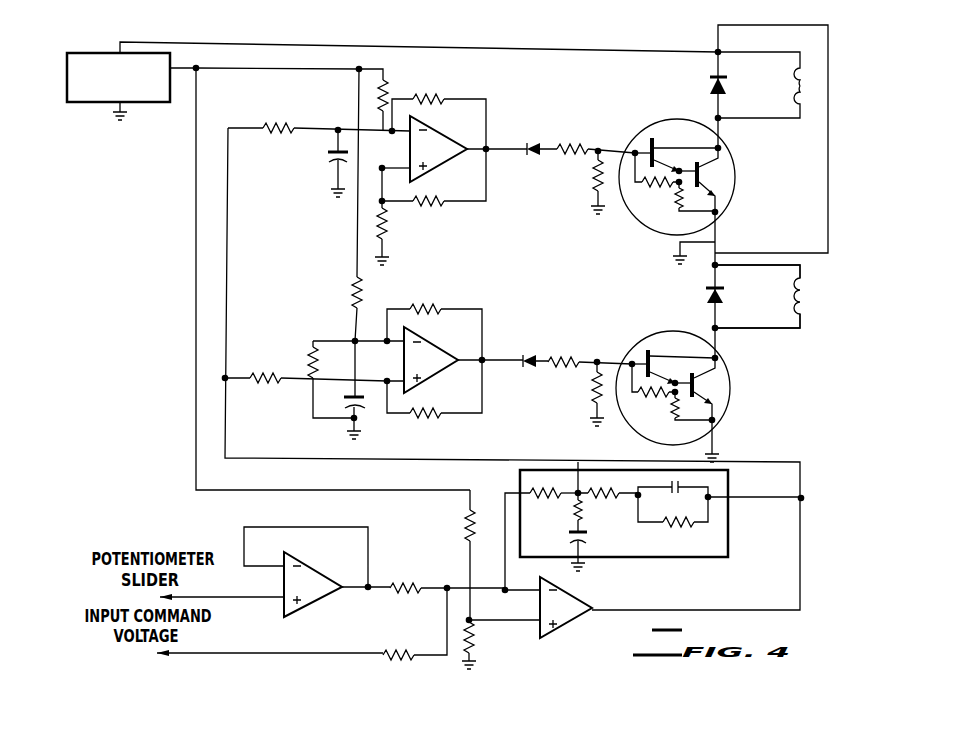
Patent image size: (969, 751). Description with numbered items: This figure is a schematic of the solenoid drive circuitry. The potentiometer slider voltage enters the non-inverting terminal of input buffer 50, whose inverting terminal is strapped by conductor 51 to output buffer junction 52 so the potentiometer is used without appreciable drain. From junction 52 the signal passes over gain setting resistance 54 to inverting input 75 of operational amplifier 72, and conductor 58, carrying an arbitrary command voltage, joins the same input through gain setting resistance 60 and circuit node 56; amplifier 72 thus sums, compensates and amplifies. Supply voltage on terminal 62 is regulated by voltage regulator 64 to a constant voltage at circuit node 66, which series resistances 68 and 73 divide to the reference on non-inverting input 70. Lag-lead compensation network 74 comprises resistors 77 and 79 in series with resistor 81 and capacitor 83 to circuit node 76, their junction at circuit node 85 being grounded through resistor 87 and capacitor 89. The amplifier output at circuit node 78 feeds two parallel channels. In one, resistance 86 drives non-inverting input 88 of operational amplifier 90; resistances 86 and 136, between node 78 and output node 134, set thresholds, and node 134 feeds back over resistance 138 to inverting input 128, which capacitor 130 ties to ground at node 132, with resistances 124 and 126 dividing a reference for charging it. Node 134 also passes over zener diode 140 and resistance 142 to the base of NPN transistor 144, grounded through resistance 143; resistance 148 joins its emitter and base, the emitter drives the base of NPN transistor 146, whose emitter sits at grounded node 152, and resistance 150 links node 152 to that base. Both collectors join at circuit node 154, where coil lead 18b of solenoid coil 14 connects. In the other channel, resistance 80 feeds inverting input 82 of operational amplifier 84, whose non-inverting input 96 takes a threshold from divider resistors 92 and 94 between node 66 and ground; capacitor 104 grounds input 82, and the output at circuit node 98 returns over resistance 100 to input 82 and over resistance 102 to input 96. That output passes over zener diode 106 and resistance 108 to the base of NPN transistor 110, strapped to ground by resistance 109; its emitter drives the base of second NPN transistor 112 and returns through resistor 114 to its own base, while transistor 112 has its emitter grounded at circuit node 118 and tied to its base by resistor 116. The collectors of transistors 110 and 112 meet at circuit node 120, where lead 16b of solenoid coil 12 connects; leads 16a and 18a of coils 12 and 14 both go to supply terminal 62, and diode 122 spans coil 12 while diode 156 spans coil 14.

The solenoid coil 12 is at (814, 105).
The solenoid coil 14 is at (804, 308).
The lead 16a is at (774, 55).
The lead 16b is at (771, 119).
The lead 18a is at (738, 267).
The coil lead 18b is at (744, 327).
The input buffer 50 is at (318, 570).
The conductor 51 is at (244, 531).
The buffer junction 52 is at (366, 590).
The gain setting resistance 54 is at (399, 585).
The circuit node 56 is at (448, 585).
The conductor 58 is at (239, 652).
The gain setting resistance 60 is at (385, 658).
The terminal 62 is at (716, 52).
The voltage regulator 64 is at (80, 52).
The circuit node 66 is at (198, 67).
The series resistance 68 is at (468, 530).
The non-inverting input 70 is at (473, 627).
The operational amplifier 72 is at (566, 626).
The series resistance 73 is at (475, 653).
The compensation network 74 is at (520, 480).
The inverting input 75 is at (507, 588).
The circuit node 76 is at (803, 498).
The resistor 77 is at (546, 498).
The circuit node 78 is at (224, 376).
The resistor 79 is at (612, 498).
The resistance 80 is at (268, 127).
The resistor 81 is at (673, 524).
The inverting input 82 is at (385, 134).
The capacitor 83 is at (669, 492).
The operational amplifier 84 is at (439, 170).
The circuit node 85 is at (577, 463).
The resistance 86 is at (256, 376).
The resistor 87 is at (572, 515).
The non-inverting input 88 is at (387, 380).
The capacitor 89 is at (593, 535).
The operational amplifier 90 is at (438, 348).
The resistor 92 is at (389, 86).
The resistor 94 is at (390, 234).
The non-inverting input 96 is at (380, 169).
The circuit node 98 is at (488, 152).
The resistance 100 is at (443, 94).
The resistance 102 is at (442, 203).
The capacitor 104 is at (330, 153).
The zener diode 106 is at (530, 144).
The resistance 108 is at (553, 145).
The resistance 109 is at (591, 189).
The NPN transistor 110 is at (656, 138).
The second NPN transistor 112 is at (707, 170).
The resistor 114 is at (656, 190).
The resistor 116 is at (676, 206).
The circuit node 118 is at (723, 208).
The circuit node 120 is at (721, 148).
The diode 122 is at (708, 86).
The resistance 124 is at (352, 293).
The resistance 126 is at (310, 348).
The inverting input 128 is at (387, 340).
The capacitor 130 is at (363, 408).
The node 132 is at (349, 422).
The circuit node 134 is at (491, 357).
The resistance 136 is at (430, 418).
The resistance 138 is at (445, 308).
The zener diode 140 is at (527, 363).
The resistance 142 is at (562, 360).
The resistance 143 is at (592, 398).
The NPN transistor 144 is at (654, 353).
The NPN transistor 146 is at (703, 382).
The resistance 148 is at (659, 396).
The resistance 150 is at (675, 412).
The grounded circuit node 152 is at (716, 422).
The circuit node 154 is at (717, 358).
The diode 156 is at (705, 301).